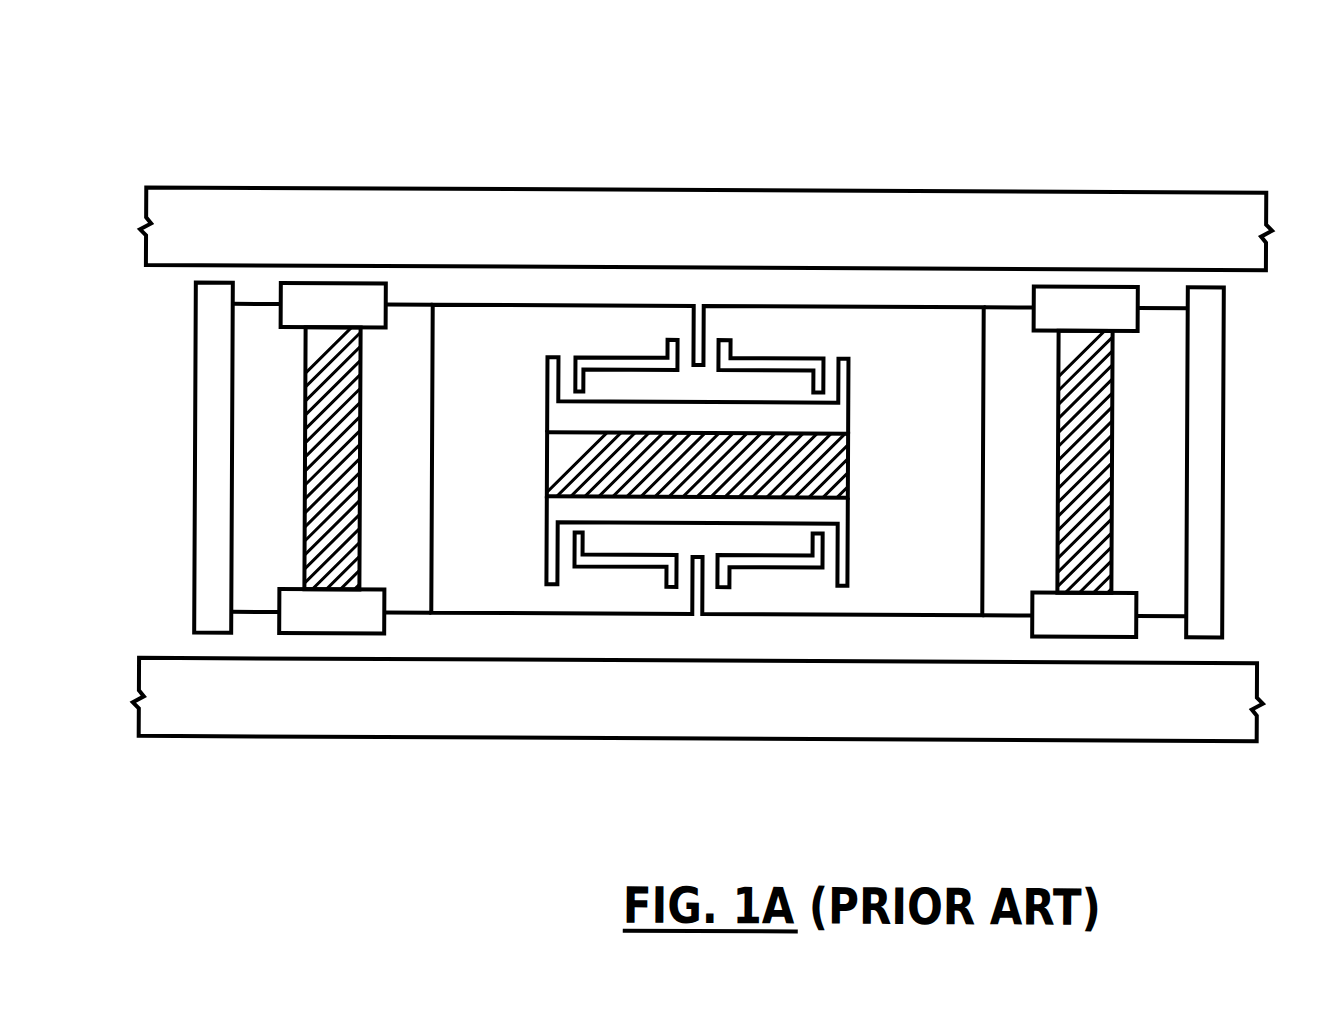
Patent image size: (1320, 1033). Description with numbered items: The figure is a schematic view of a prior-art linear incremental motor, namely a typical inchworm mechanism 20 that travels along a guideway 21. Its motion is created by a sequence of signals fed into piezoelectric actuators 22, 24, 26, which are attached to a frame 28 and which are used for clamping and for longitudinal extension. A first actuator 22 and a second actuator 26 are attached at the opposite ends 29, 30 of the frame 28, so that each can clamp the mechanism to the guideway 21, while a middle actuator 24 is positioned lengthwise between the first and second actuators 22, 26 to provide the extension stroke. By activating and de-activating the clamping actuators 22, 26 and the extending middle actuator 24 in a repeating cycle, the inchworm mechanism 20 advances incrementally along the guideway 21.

The inchworm mechanism 20 is at (822, 302).
The guideway 21 is at (1027, 182).
The first actuator 22 is at (305, 410).
The middle actuator 24 is at (720, 433).
The second actuator 26 is at (1110, 427).
The frame 28 is at (787, 614).
The first end of frame 29 is at (333, 285).
The second end of frame 30 is at (1110, 285).